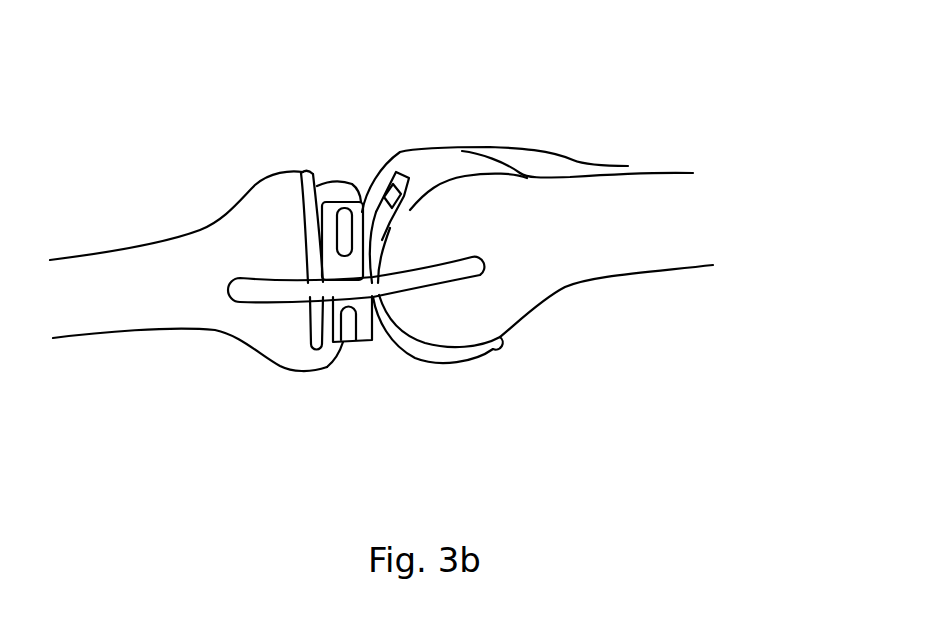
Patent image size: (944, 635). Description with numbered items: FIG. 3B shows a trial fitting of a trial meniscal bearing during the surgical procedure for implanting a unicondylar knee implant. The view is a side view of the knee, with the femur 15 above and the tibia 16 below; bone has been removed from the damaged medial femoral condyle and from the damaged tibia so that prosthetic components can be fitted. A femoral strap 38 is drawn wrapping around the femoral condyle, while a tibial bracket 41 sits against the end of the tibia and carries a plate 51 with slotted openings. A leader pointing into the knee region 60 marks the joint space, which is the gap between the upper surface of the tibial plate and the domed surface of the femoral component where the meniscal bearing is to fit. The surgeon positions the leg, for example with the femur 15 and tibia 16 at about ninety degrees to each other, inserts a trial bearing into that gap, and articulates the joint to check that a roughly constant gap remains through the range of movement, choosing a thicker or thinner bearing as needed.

The femur 15 is at (632, 208).
The tibia 16 is at (110, 305).
The femoral strap 38 is at (478, 366).
The tibial bracket 41 is at (310, 170).
The plate 51 is at (352, 342).
The knee joint region 60 is at (455, 208).